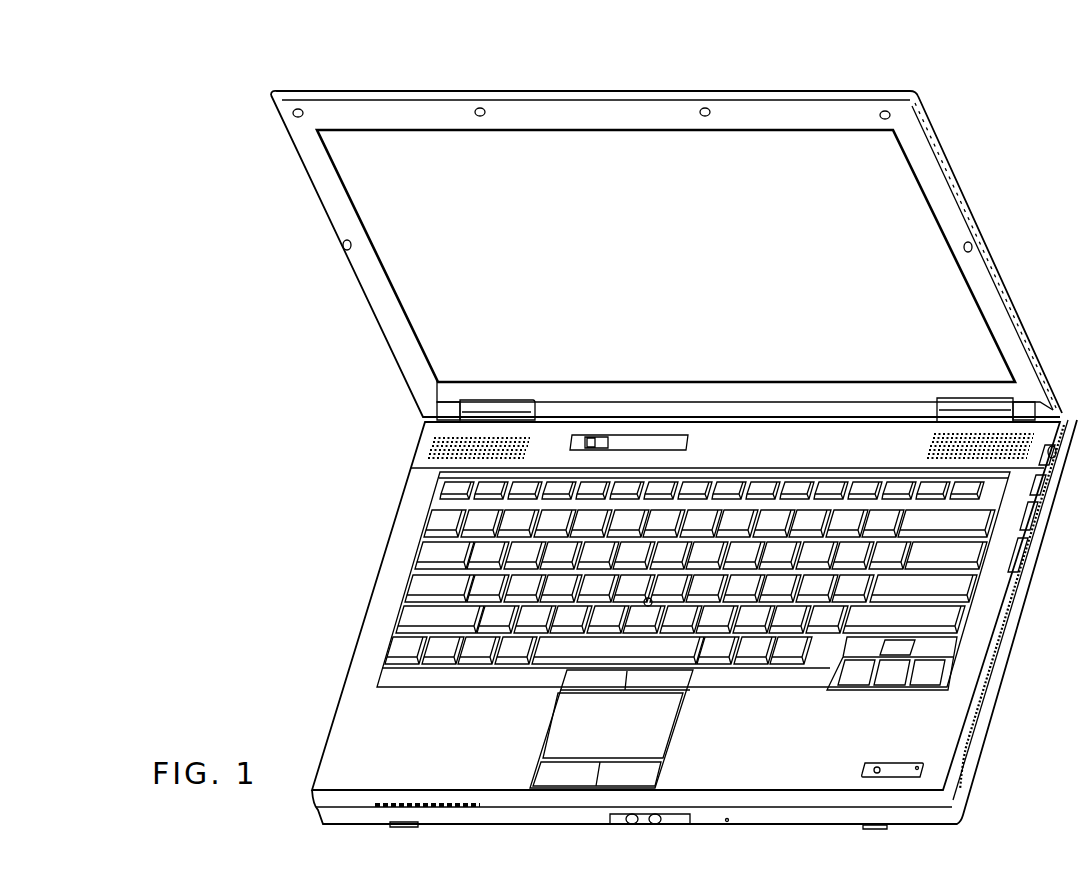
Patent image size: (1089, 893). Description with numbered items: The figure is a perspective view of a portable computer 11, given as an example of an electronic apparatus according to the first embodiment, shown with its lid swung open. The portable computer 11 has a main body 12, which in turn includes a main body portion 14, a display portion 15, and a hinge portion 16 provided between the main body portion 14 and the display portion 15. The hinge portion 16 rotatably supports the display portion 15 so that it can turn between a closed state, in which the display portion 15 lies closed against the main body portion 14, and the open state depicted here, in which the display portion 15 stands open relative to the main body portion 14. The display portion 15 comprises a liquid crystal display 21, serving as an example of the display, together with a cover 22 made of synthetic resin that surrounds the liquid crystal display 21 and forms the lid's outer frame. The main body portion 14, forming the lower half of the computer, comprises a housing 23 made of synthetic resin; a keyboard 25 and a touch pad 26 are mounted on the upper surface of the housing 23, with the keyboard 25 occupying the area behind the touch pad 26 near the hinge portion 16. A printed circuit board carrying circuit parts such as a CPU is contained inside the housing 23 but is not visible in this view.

The portable computer 11 is at (628, 92).
The main body 12 is at (1063, 410).
The main body portion 14 is at (368, 602).
The display portion 15 is at (356, 280).
The hinge portion 16 is at (490, 405).
The liquid crystal display 21 is at (531, 150).
The cover 22 is at (935, 192).
The housing 23 is at (352, 673).
The keyboard 25 is at (955, 583).
The touch pad 26 is at (658, 742).